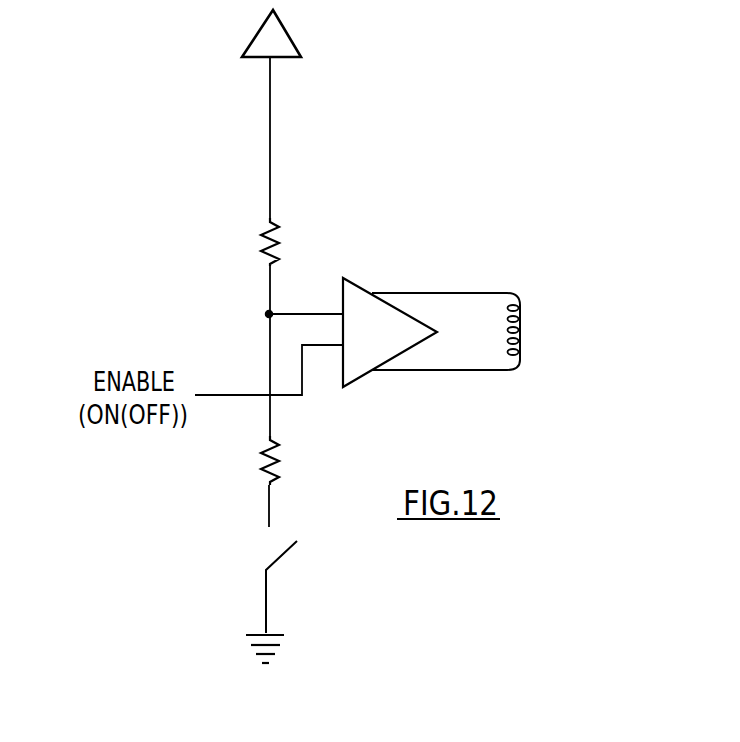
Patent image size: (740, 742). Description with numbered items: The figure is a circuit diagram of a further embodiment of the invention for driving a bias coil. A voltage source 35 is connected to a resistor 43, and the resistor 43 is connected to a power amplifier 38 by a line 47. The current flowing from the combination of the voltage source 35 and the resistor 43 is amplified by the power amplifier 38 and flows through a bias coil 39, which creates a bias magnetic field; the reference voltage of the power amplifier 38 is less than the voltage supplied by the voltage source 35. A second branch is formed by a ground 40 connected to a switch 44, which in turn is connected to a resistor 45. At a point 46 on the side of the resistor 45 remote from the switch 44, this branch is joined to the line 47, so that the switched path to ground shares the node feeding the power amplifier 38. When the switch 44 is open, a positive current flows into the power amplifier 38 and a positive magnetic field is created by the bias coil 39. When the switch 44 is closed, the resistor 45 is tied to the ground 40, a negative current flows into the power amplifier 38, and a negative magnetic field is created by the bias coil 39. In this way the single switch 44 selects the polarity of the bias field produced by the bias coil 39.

The voltage source 35 is at (290, 33).
The resistor 43 is at (276, 241).
The point 46 is at (265, 318).
The line 47 is at (297, 313).
The power amplifier 38 is at (360, 284).
The bias coil 39 is at (522, 322).
The resistor 45 is at (276, 459).
The switch 44 is at (282, 557).
The ground 40 is at (275, 632).